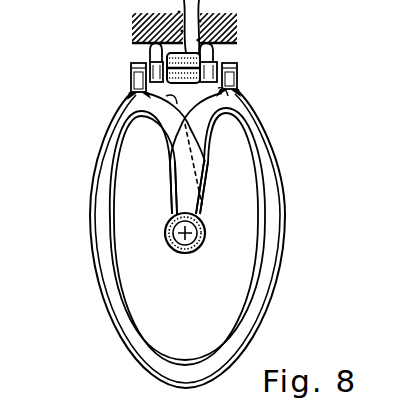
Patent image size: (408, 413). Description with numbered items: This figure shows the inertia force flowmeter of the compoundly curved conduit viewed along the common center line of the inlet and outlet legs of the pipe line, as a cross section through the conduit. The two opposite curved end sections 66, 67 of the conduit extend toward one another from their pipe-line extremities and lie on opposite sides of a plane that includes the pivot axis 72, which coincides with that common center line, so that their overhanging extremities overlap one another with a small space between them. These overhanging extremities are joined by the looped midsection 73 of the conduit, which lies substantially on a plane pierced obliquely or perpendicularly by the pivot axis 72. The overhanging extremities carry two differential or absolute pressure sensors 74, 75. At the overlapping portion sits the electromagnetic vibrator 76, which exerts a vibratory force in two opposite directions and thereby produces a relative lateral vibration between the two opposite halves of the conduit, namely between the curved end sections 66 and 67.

The curved end section 66 is at (173, 141).
The curved end section 67 is at (206, 139).
The pivot axis 72 is at (198, 242).
The looped midsection 73 is at (271, 244).
The pressure sensor 74 is at (138, 127).
The pressure sensor 75 is at (243, 124).
The electromagnetic vibrator 76 is at (222, 52).